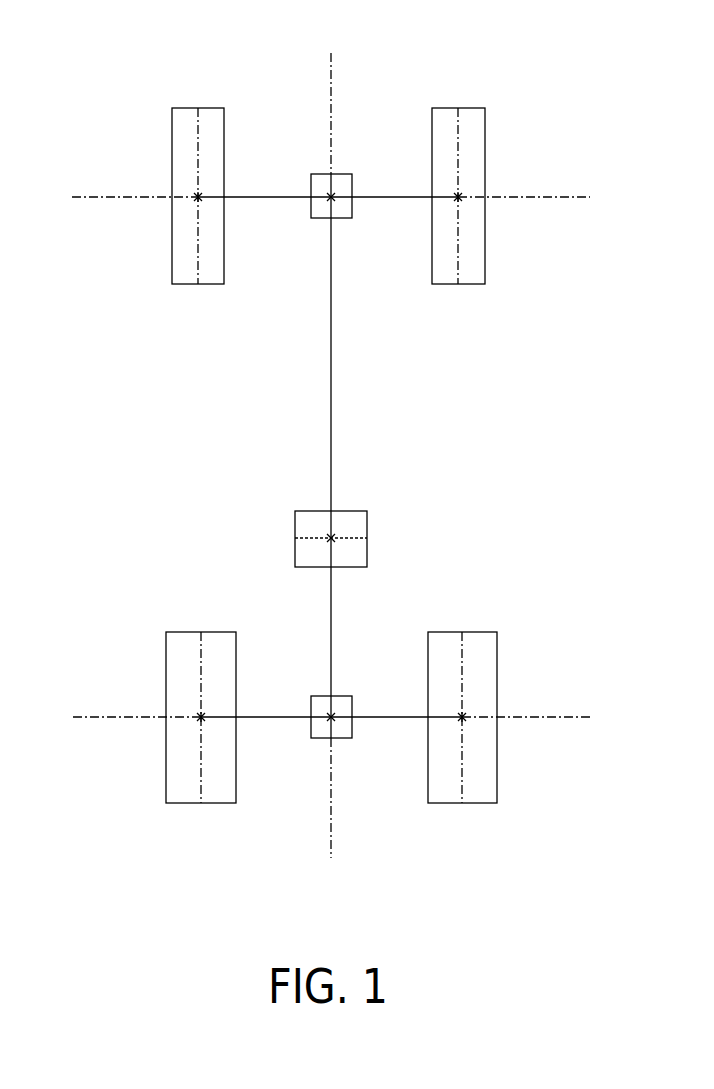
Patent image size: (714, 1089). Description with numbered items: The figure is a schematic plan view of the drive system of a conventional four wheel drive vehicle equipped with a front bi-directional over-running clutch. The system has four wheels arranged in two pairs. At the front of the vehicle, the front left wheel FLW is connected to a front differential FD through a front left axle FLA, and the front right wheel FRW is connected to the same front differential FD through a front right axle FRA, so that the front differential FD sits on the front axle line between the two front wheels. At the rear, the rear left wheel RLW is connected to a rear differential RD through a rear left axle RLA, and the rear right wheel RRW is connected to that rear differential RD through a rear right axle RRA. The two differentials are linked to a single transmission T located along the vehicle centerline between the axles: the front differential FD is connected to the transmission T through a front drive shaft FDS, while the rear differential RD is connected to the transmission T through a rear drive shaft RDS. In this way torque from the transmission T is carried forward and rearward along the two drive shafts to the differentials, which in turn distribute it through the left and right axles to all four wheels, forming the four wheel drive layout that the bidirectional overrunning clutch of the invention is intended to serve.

The front left wheel FLW is at (173, 143).
The front left axle FLA is at (263, 196).
The front differential FD is at (342, 174).
The front right axle FRA is at (399, 196).
The front right wheel FRW is at (487, 145).
The front drive shaft FDS is at (331, 400).
The transmission T is at (370, 523).
The rear drive shaft RDS is at (332, 620).
The rear differential RD is at (317, 738).
The rear left wheel RLW is at (166, 655).
The rear left axle RLA is at (262, 718).
The rear right axle RRA is at (383, 718).
The rear right wheel RRW is at (497, 663).